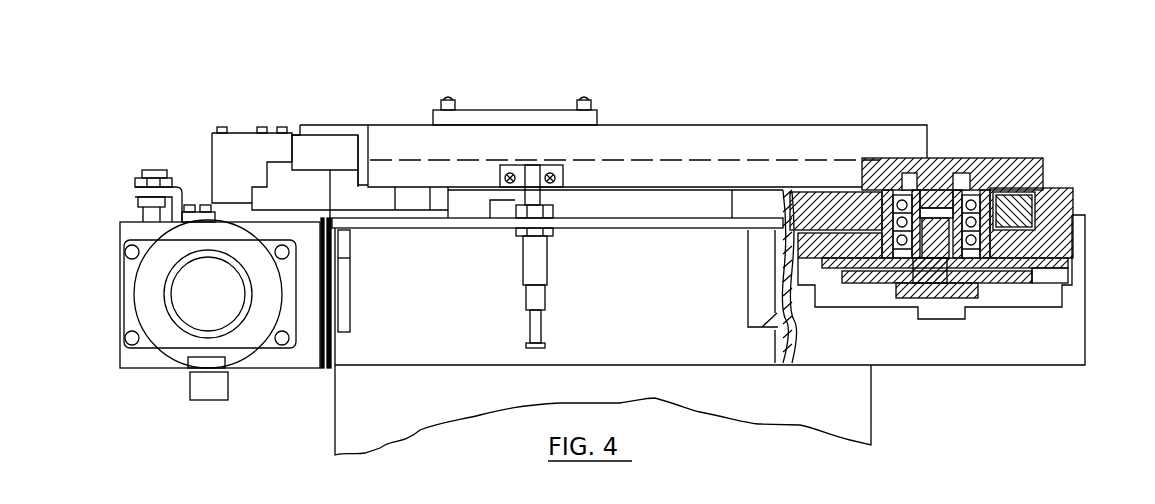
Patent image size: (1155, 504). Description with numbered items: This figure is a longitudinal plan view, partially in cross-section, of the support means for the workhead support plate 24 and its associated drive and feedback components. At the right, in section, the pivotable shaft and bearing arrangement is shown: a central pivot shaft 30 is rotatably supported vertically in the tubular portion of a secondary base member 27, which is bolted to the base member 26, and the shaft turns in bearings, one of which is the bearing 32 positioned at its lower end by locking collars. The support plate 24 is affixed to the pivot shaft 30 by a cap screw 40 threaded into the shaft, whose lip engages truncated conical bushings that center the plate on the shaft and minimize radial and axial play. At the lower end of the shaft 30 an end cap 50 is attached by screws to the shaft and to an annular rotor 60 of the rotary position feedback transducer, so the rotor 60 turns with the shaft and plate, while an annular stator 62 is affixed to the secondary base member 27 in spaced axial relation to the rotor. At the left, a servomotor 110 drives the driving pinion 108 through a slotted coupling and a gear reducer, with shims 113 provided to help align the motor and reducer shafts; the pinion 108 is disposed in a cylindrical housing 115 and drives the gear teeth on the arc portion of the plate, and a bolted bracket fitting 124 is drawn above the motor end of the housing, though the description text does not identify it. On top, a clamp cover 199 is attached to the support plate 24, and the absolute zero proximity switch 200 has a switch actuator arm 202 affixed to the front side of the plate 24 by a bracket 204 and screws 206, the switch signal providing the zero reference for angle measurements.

The workhead support plate 24 is at (1013, 163).
The base member 26 is at (1047, 192).
The secondary base member 27 is at (1050, 242).
The pivot shaft 30 is at (953, 180).
The bearing 32 is at (1047, 260).
The cap screw 40 is at (900, 192).
The end cap 50 is at (930, 300).
The annular rotor 60 is at (1013, 282).
The annular stator 62 is at (1045, 262).
The driving pinion 108 is at (246, 131).
The servomotor 110 is at (175, 352).
The shims 113 is at (327, 372).
The cylindrical housing 115 is at (222, 165).
The adjusting bolt 124 is at (160, 170).
The cover 199 is at (500, 116).
The absolute zero proximity switch 200 is at (545, 248).
The switch actuator arm 202 is at (537, 168).
The bracket 204 is at (565, 176).
The screws 206 is at (500, 178).